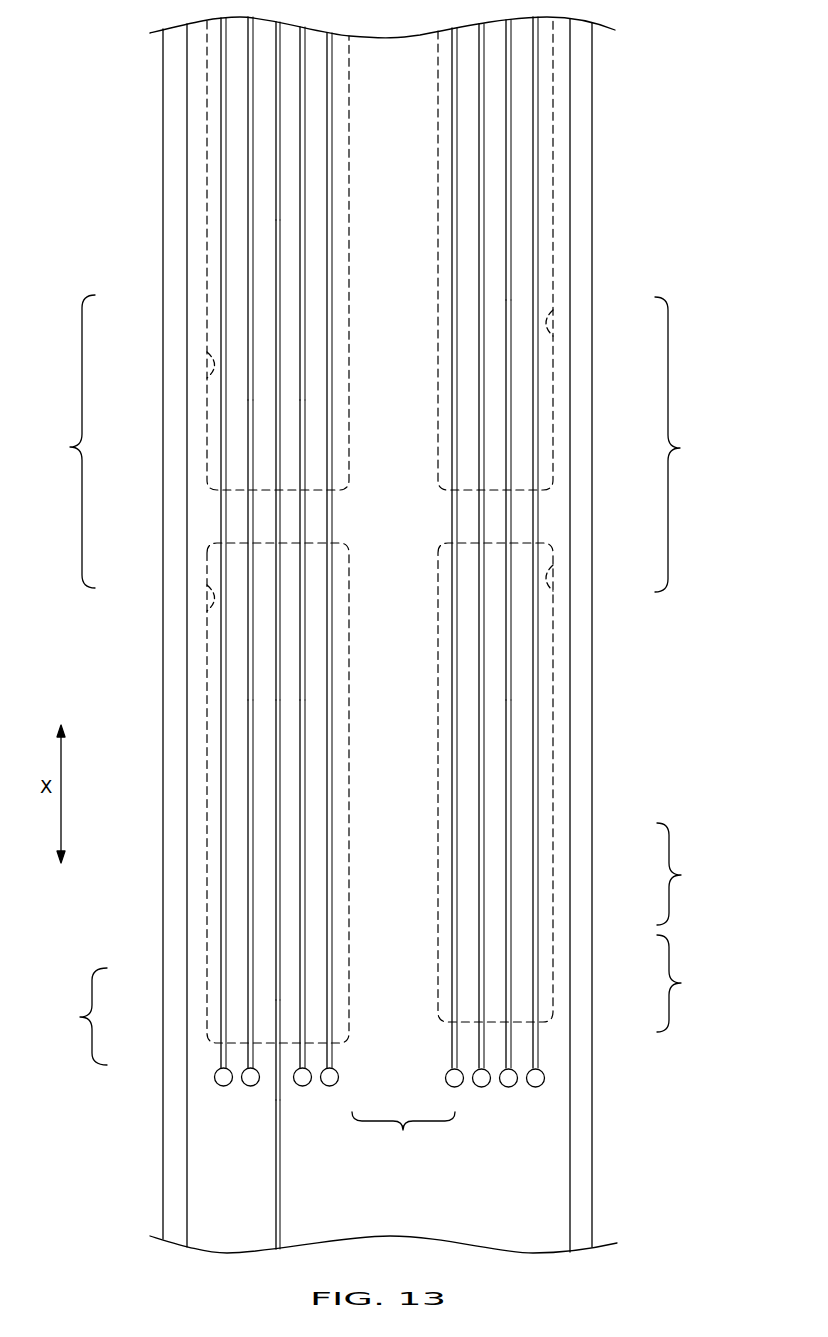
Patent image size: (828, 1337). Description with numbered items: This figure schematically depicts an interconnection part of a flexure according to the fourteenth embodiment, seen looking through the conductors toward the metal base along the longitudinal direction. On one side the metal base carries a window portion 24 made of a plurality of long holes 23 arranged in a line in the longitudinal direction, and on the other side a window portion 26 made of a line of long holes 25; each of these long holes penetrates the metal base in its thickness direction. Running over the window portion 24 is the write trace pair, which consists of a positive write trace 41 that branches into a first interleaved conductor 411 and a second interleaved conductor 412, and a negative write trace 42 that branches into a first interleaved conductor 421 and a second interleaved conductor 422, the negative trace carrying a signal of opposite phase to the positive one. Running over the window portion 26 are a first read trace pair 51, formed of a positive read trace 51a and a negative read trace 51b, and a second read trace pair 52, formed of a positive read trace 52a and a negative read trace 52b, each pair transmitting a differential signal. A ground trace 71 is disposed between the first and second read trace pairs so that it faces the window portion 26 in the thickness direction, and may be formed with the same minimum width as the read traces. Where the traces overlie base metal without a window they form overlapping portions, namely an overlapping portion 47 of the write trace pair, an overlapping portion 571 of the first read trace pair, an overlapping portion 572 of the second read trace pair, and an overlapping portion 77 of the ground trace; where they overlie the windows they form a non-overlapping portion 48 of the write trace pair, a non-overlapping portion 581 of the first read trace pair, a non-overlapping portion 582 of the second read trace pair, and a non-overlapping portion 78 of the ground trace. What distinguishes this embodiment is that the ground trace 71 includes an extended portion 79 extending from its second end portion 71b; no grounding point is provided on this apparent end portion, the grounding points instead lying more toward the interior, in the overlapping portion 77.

The long hole 23 is at (545, 320).
The window portion 24 is at (683, 444).
The long hole 25 is at (220, 362).
The window portion 26 is at (66, 441).
The positive write trace 41 is at (684, 983).
The first interleaved conductor 411 is at (483, 962).
The second interleaved conductor 412 is at (537, 995).
The negative write trace 42 is at (684, 874).
The first interleaved conductor 421 is at (509, 880).
The second interleaved conductor 422 is at (457, 818).
The overlapping portion of the write trace pair 47 is at (503, 523).
The non-overlapping portion of the write trace pair 48 is at (508, 82).
The first read trace pair 51 is at (403, 1134).
The positive read trace 51a is at (305, 992).
The negative read trace 51b is at (333, 938).
The second read trace pair 52 is at (80, 1016).
The positive read trace 52a is at (248, 1022).
The negative read trace 52b is at (222, 970).
The overlapping portion of the first read trace pair 571 is at (306, 528).
The overlapping portion of the second read trace pair 572 is at (253, 515).
The non-overlapping portion of the first read trace pair 581 is at (305, 270).
The non-overlapping portion of the second read trace pair 582 is at (252, 167).
The ground trace 71 is at (281, 934).
The second end portion 71b is at (278, 1062).
The overlapping portion of the ground trace 77 is at (280, 525).
The non-overlapping portion of the ground trace 78 is at (280, 217).
The extended portion 79 is at (277, 1158).